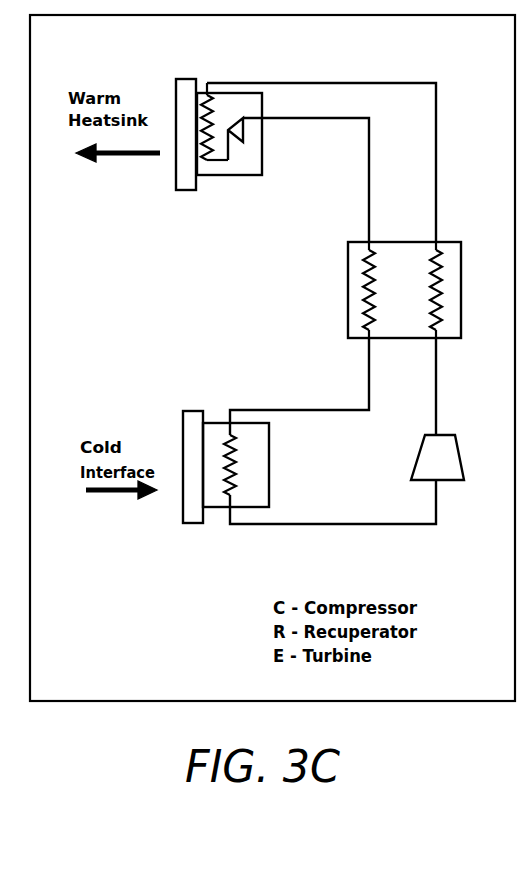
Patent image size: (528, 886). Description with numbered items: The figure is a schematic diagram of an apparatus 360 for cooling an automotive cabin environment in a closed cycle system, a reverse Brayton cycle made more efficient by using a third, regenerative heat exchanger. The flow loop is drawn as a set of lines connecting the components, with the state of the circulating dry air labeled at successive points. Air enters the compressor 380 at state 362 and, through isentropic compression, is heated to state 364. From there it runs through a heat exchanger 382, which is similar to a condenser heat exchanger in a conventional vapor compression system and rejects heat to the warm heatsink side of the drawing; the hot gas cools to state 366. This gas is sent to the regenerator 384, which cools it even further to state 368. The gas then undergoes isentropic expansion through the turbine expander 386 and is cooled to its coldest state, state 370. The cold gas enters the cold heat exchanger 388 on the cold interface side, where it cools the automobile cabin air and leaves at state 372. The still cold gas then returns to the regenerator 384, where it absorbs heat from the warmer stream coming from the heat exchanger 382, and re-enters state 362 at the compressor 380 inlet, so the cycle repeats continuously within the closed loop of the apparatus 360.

The apparatus 360 is at (400, 56).
The state 362 is at (306, 180).
The state 364 is at (229, 152).
The state 366 is at (321, 143).
The state 368 is at (463, 386).
The state 370 is at (342, 519).
The state 372 is at (299, 386).
The compressor 380 is at (240, 137).
The heat exchanger 382 is at (204, 95).
The regenerator 384 is at (348, 291).
The turbine expander 386 is at (418, 456).
The cold heat exchanger 388 is at (229, 440).